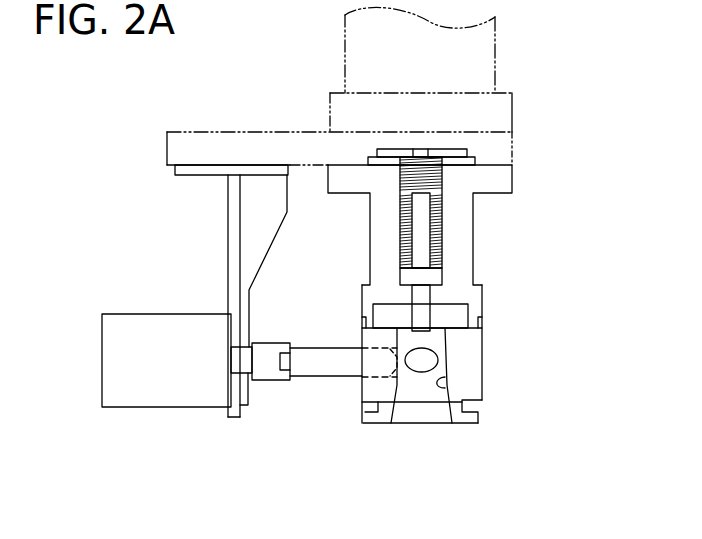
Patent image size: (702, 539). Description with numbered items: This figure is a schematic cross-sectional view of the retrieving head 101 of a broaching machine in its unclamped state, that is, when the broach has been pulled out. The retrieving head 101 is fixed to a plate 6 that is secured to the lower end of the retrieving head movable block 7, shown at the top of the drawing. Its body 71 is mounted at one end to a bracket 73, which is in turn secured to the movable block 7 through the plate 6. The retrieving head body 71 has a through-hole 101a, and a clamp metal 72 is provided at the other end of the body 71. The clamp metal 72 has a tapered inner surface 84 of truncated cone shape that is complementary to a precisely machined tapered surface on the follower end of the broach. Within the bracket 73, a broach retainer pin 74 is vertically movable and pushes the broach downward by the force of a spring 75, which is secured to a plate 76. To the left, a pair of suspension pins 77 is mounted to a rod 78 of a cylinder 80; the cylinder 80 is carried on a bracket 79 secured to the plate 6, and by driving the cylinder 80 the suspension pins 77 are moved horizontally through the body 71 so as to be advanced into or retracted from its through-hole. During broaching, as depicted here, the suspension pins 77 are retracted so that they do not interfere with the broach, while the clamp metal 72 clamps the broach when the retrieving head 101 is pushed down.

The plate 6 is at (183, 152).
The retrieving head movable block 7 is at (350, 66).
The retrieving head body 71 is at (468, 352).
The clamp metal 72 is at (478, 413).
The bracket 73 is at (468, 297).
The broach retainer pin 74 is at (430, 276).
The spring 75 is at (440, 183).
The plate 76 is at (466, 153).
The suspension pins 77 is at (307, 367).
The rod 78 is at (262, 362).
The bracket 79 is at (230, 310).
The cylinder 80 is at (135, 320).
The tapered inner surface 84 is at (452, 402).
The retrieving head 101 is at (358, 398).
The through-hole 101a is at (445, 387).